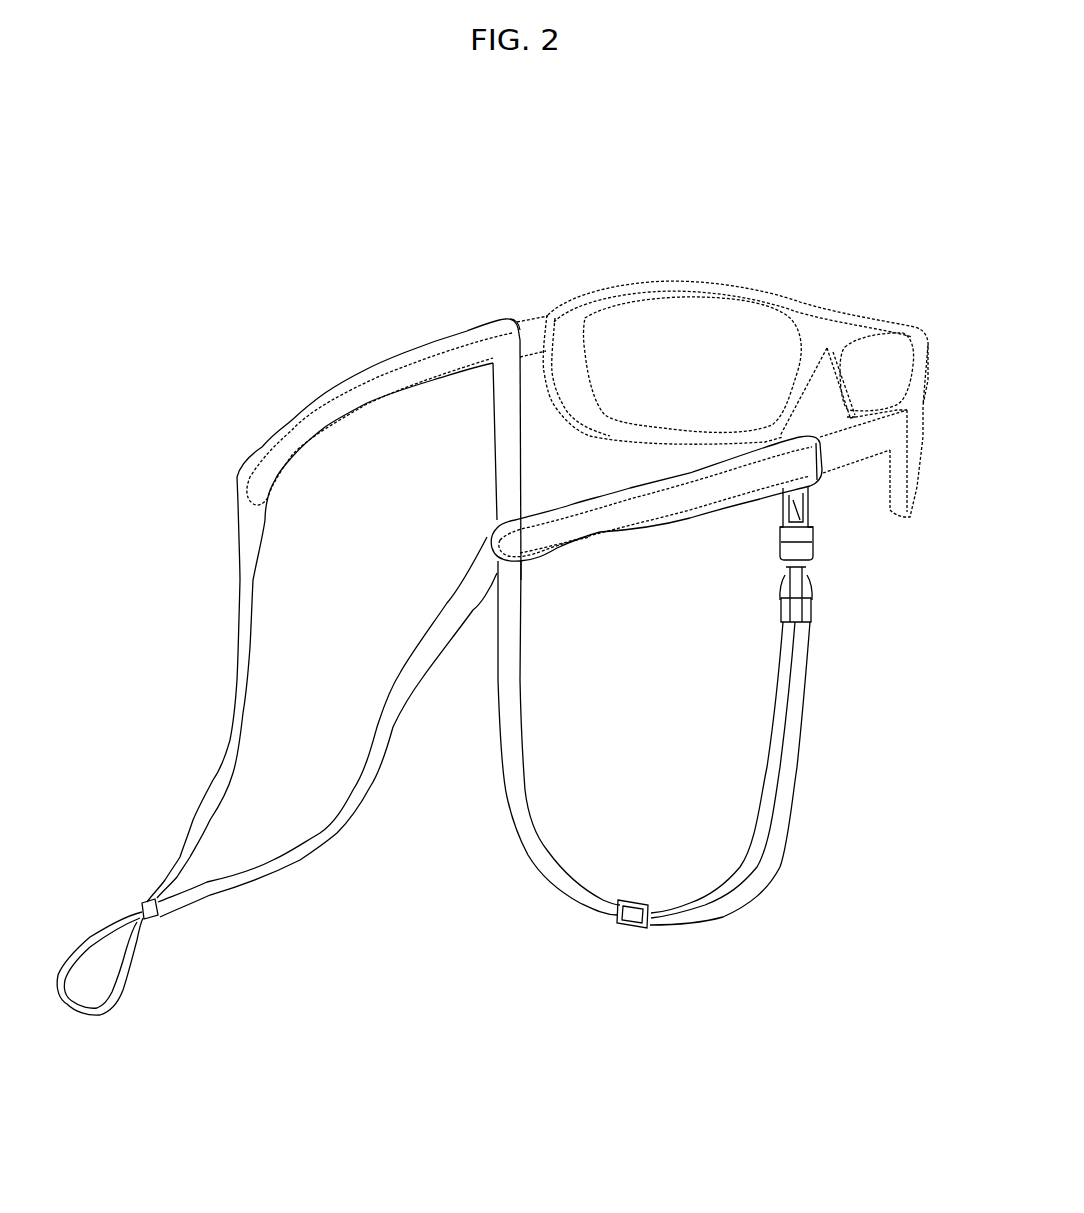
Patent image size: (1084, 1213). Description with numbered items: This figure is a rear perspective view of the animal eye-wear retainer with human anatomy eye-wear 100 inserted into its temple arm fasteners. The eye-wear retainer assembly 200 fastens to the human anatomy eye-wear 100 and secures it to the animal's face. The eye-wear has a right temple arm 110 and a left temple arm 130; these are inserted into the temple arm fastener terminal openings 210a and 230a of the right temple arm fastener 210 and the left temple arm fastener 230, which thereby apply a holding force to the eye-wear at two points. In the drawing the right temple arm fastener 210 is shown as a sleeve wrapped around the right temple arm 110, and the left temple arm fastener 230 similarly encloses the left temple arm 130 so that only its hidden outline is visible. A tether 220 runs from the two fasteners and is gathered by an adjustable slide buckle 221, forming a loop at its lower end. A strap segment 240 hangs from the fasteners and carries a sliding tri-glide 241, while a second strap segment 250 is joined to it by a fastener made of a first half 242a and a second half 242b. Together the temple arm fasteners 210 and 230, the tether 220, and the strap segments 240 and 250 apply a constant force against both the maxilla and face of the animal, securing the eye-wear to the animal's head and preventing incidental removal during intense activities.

The human anatomy eye-wear 100 is at (757, 283).
The human anatomy eye-wear right temple arm 110 is at (613, 527).
The human anatomy eye-wear left temple arm 130 is at (300, 422).
The eye-wear retainer assembly 200 is at (228, 560).
The right temple arm fastener 210 is at (577, 540).
The temple arm fastener terminal opening 210a is at (823, 457).
The tether 220 is at (347, 813).
The adjustable slide buckle 221 is at (160, 917).
The left temple arm fastener 230 is at (410, 350).
The temple arm fastener terminal opening 230a is at (513, 320).
The strap segment 240 is at (507, 680).
The sliding tri-glide 241 is at (643, 930).
The first half of fastener 242a is at (810, 587).
The second half of fastener 242b is at (810, 557).
The strap segment 250 is at (798, 498).